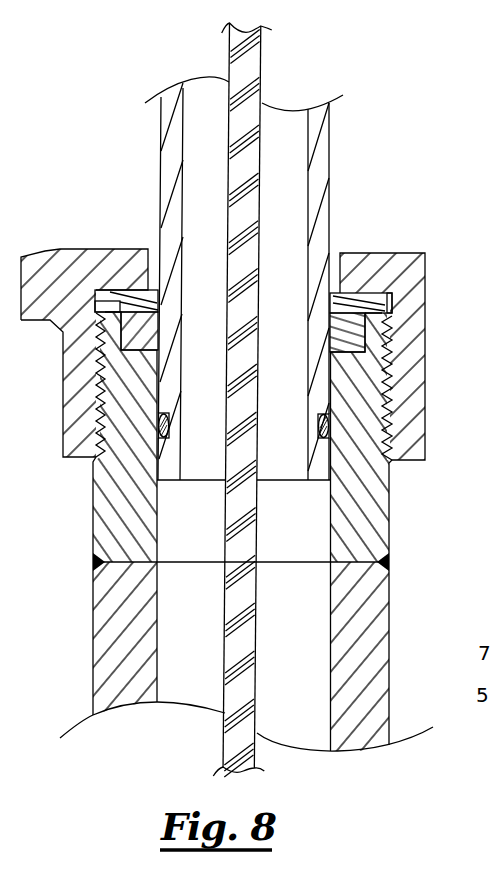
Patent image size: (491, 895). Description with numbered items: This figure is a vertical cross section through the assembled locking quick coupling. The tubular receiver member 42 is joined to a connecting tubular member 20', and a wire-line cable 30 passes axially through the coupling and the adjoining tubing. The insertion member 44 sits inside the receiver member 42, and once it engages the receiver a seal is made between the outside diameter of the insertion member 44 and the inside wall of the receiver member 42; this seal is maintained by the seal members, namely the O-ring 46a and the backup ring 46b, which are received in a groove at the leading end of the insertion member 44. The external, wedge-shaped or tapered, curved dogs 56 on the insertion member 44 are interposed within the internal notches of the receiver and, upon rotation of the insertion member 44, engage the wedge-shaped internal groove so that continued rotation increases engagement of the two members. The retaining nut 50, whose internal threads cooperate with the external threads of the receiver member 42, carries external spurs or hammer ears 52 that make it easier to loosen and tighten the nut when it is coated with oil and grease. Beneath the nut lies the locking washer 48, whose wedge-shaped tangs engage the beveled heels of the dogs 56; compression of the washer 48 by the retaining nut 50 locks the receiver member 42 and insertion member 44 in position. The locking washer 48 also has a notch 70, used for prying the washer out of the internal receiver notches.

The wire-line cable 30 is at (252, 60).
The insertion member 44 is at (320, 170).
The hammer ears 52 is at (32, 257).
The dogs 56 is at (122, 345).
The retaining nut 50 is at (382, 258).
The backup ring 46b is at (330, 408).
The locking washer 48 is at (394, 296).
The notch 70 is at (133, 342).
The tubular receiver member 42 is at (105, 517).
The O-ring 46a is at (340, 448).
The tubular member 20' is at (227, 652).